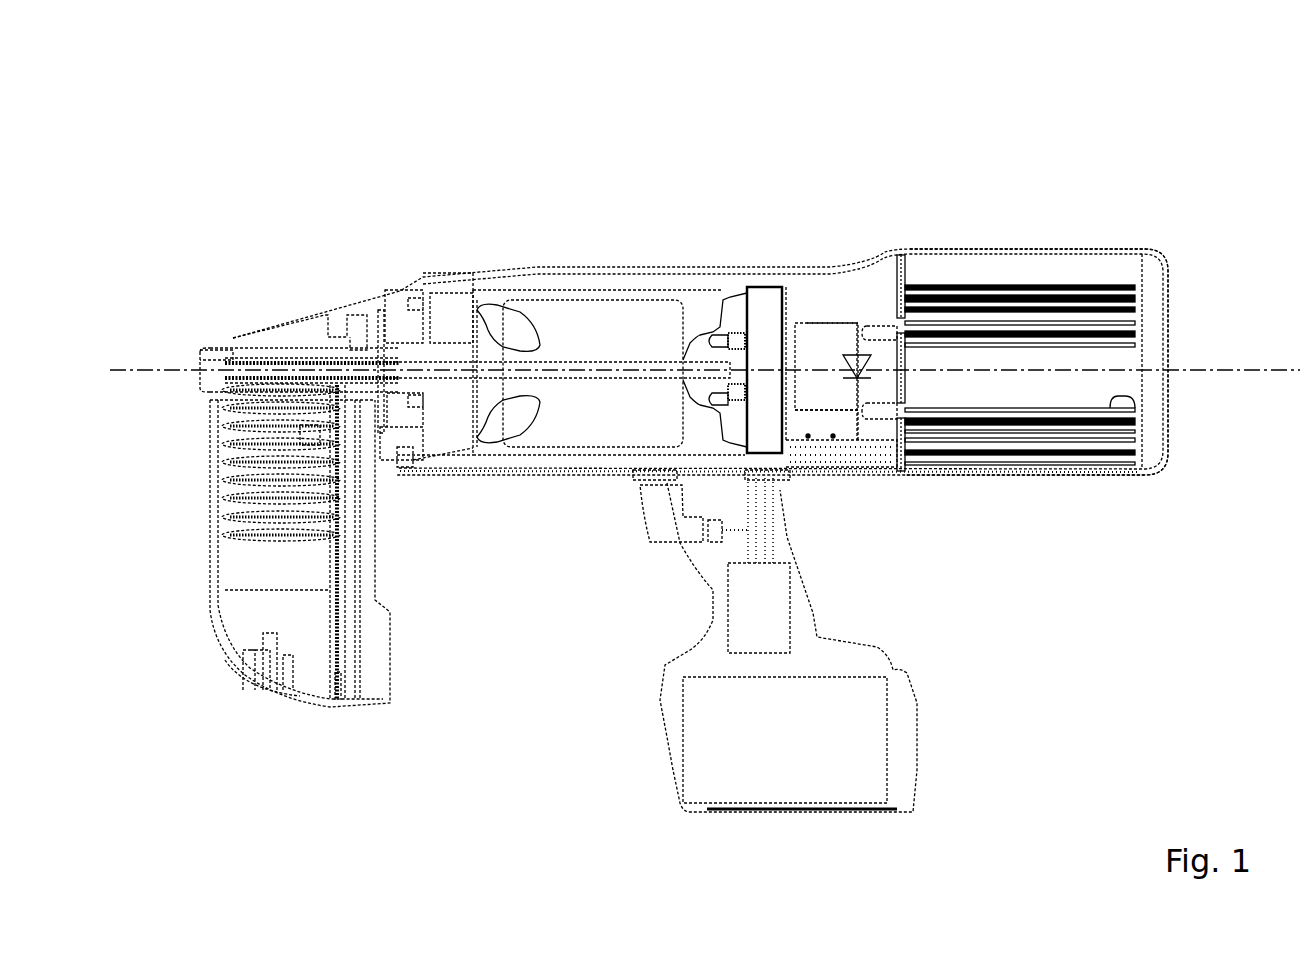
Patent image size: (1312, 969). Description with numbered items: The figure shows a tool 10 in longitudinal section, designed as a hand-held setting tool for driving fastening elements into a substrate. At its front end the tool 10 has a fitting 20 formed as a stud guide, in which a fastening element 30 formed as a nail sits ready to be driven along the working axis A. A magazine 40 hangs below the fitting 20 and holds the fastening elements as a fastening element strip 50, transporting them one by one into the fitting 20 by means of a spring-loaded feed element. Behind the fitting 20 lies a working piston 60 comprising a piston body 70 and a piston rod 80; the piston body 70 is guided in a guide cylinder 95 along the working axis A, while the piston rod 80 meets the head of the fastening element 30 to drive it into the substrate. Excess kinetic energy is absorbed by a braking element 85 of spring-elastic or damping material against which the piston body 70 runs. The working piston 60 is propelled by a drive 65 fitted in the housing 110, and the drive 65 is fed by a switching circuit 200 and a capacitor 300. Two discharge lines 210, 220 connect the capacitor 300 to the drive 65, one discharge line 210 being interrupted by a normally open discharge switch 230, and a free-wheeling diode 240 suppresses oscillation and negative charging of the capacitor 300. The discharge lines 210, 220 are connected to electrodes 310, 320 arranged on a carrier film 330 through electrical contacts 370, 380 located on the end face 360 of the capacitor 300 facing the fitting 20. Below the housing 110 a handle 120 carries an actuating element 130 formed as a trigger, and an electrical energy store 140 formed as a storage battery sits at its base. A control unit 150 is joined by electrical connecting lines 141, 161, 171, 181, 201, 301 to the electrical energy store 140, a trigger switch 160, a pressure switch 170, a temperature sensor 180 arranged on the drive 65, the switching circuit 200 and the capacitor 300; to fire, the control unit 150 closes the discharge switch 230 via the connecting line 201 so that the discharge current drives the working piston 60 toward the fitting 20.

The tool 10 is at (220, 137).
The fitting 20 is at (210, 342).
The fastening element 30 is at (290, 358).
The magazine 40 is at (285, 568).
The fastening element strip 50 is at (350, 543).
The working piston 60 is at (636, 160).
The drive 65 is at (766, 345).
The piston body 70 is at (700, 343).
The piston rod 80 is at (600, 378).
The braking element 85 is at (495, 330).
The guide cylinder 95 is at (548, 300).
The housing 110 is at (1133, 250).
The handle 120 is at (713, 593).
The actuating element 130 is at (653, 493).
The electrical energy store 140 is at (718, 757).
The electrical connecting line 141 is at (763, 660).
The control unit 150 is at (750, 607).
The trigger switch 160 is at (713, 530).
The electrical connecting line 161 is at (733, 547).
The pressure switch 170 is at (407, 462).
The electrical connecting line 171 is at (442, 468).
The temperature sensor 180 is at (797, 475).
The electrical connecting line 181 is at (760, 508).
The switching circuit 200 is at (838, 300).
The electrical connecting line 201 is at (813, 425).
The discharge line 210 is at (913, 430).
The discharge line 220 is at (807, 323).
The discharge switch 230 is at (857, 420).
The free-wheeling diode 240 is at (907, 347).
The capacitor 300 is at (1071, 268).
The electrical connecting line 301 is at (923, 445).
The electrode 310 is at (1122, 330).
The electrode 320 is at (1125, 382).
The carrier film 330 is at (1133, 330).
The end face 360 is at (884, 290).
The electrical contact 370 is at (903, 317).
The electrical contact 380 is at (923, 420).
The working axis A is at (1208, 370).